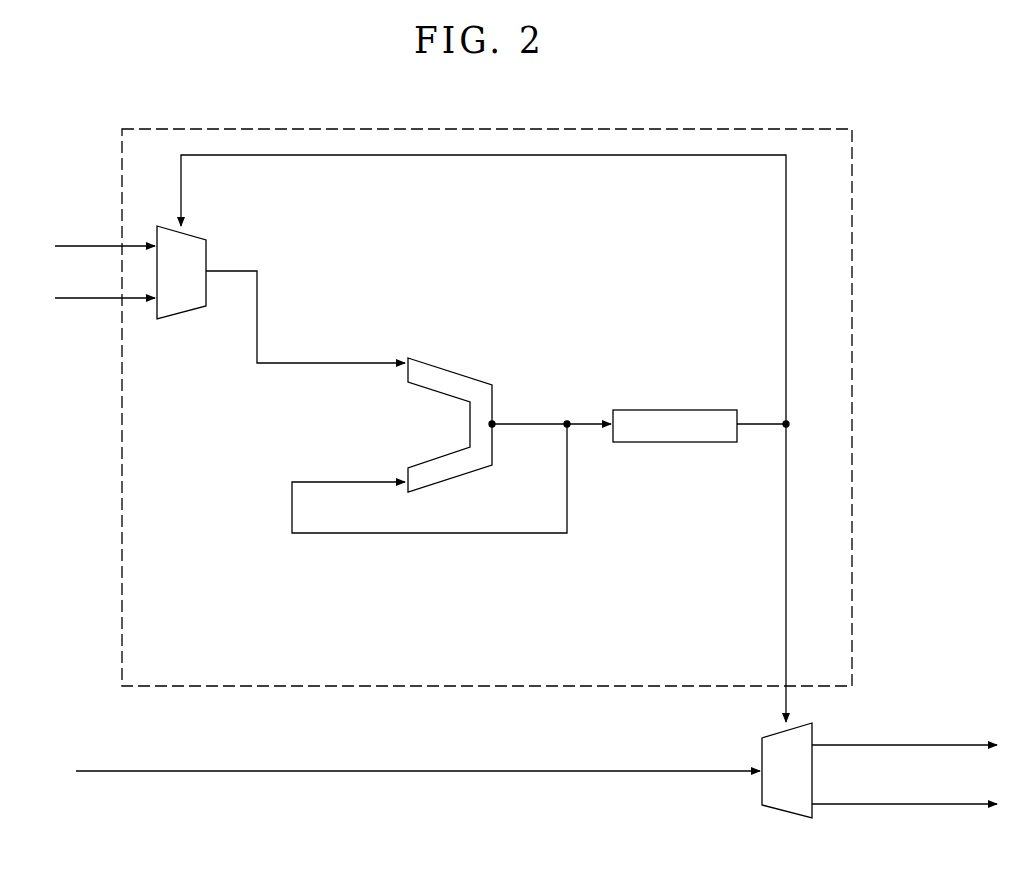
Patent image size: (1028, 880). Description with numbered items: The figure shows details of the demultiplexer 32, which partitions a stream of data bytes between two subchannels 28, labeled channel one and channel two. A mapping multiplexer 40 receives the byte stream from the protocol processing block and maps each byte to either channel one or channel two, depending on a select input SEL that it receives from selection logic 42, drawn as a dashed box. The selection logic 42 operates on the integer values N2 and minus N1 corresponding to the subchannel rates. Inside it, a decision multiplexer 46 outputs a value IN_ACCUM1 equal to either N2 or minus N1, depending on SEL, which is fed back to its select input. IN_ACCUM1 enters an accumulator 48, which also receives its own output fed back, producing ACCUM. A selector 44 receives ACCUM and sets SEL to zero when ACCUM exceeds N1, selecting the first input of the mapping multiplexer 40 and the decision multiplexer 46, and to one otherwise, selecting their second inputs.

The demultiplexer 32 is at (930, 90).
The selection logic 42 is at (852, 315).
The decision multiplexer 46 is at (196, 233).
The accumulator 48 is at (455, 366).
The selector 44 is at (640, 409).
The mapping multiplexer 40 is at (770, 808).
The subchannels 28 is at (958, 746).